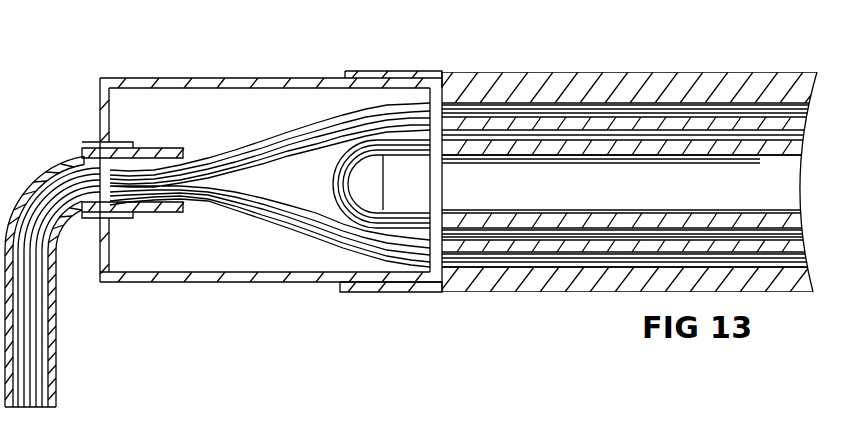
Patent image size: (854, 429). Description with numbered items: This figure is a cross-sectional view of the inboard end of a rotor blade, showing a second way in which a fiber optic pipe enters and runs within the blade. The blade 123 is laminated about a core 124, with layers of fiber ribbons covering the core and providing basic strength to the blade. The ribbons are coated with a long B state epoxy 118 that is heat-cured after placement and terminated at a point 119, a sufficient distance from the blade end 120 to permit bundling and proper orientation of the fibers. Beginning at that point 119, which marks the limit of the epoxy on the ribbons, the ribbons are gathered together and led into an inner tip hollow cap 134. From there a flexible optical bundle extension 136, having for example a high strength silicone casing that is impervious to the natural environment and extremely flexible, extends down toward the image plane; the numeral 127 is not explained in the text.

The long B state epoxy 118 is at (485, 78).
The epoxy termination point 119 is at (431, 100).
The blade end 120 is at (100, 114).
The blade 123 is at (352, 292).
The core 124 is at (460, 207).
The cable 127 is at (55, 365).
The inner tip hollow cap 134 is at (240, 78).
The flexible optical bundle extension 136 is at (56, 300).